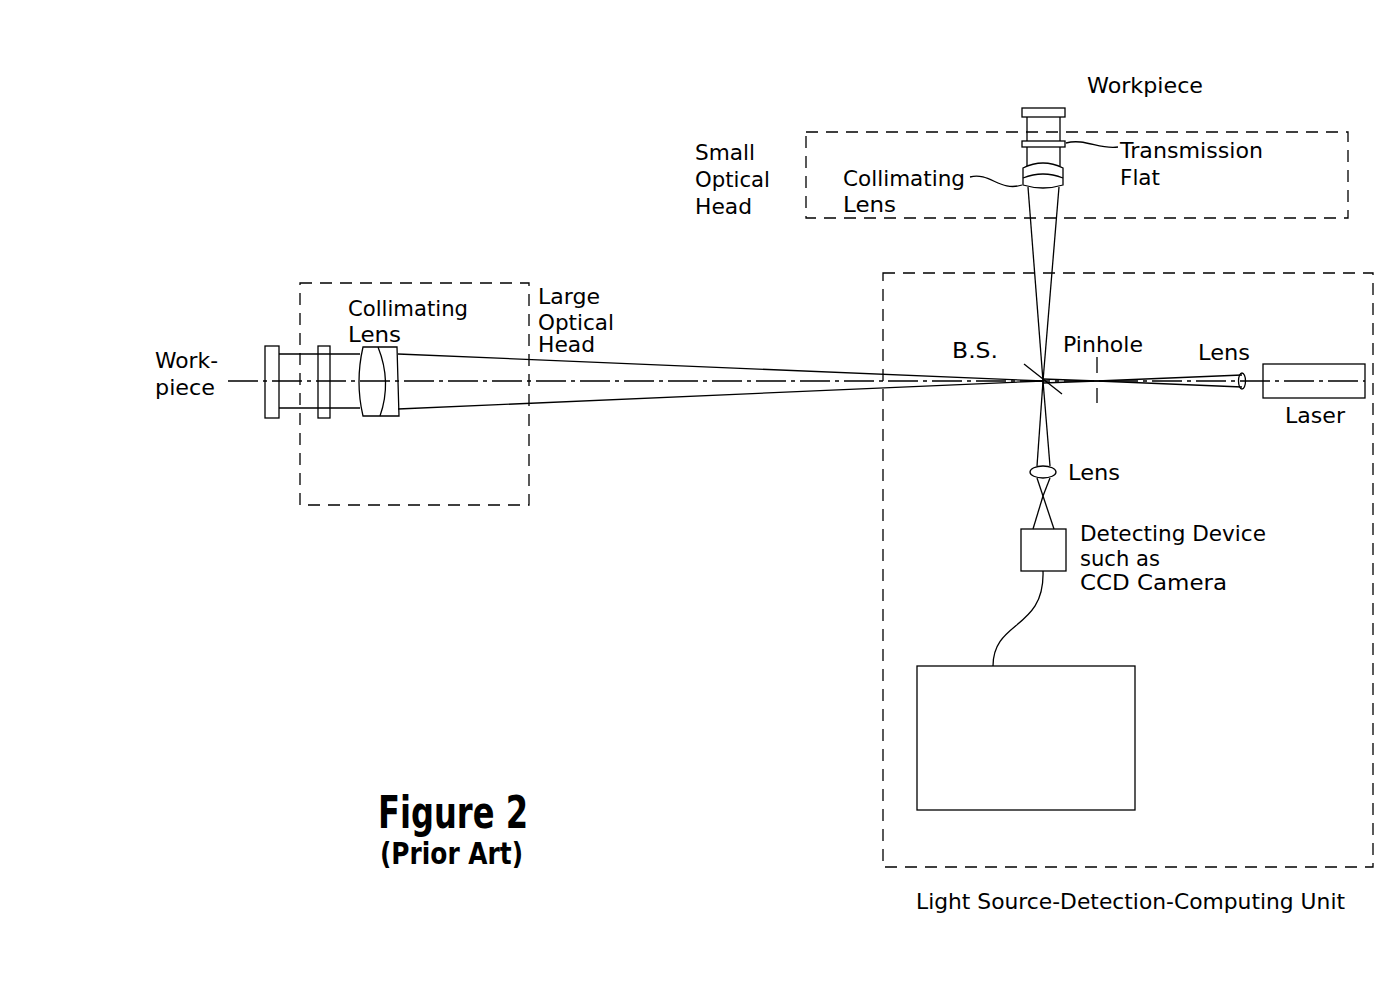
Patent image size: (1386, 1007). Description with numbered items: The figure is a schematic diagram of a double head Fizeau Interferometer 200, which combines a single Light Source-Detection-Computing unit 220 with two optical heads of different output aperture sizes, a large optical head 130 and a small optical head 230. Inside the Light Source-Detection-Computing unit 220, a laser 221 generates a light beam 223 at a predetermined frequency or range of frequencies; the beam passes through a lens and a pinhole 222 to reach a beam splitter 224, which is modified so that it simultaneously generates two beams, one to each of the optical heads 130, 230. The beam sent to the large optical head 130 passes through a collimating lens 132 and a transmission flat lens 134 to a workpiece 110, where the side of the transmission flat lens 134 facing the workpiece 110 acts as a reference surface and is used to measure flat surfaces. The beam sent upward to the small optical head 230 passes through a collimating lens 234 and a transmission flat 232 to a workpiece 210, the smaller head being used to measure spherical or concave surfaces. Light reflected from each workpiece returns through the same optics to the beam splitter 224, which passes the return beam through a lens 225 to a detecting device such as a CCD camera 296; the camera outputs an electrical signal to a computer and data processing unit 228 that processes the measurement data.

The workpiece 110 is at (268, 418).
The optical head 130 is at (414, 394).
The collimating lens 132 is at (385, 417).
The transmission flat lens 134 is at (322, 419).
The double head Fizeau Interferometer 200 is at (667, 670).
The workpiece 210 is at (1040, 108).
The Light Source-Detection-Computing unit 220 is at (1294, 829).
The laser 221 is at (1342, 364).
The pinhole 222 is at (1103, 388).
The light beam 223 is at (1173, 382).
The beam splitter 224 is at (1022, 372).
The lens 225 is at (1030, 473).
The computer and data processing unit 228 is at (1026, 738).
The optical head 230 is at (1077, 175).
The transmission flat 232 is at (1011, 152).
The collimating lens 234 is at (1063, 188).
The CCD camera 296 is at (1021, 555).